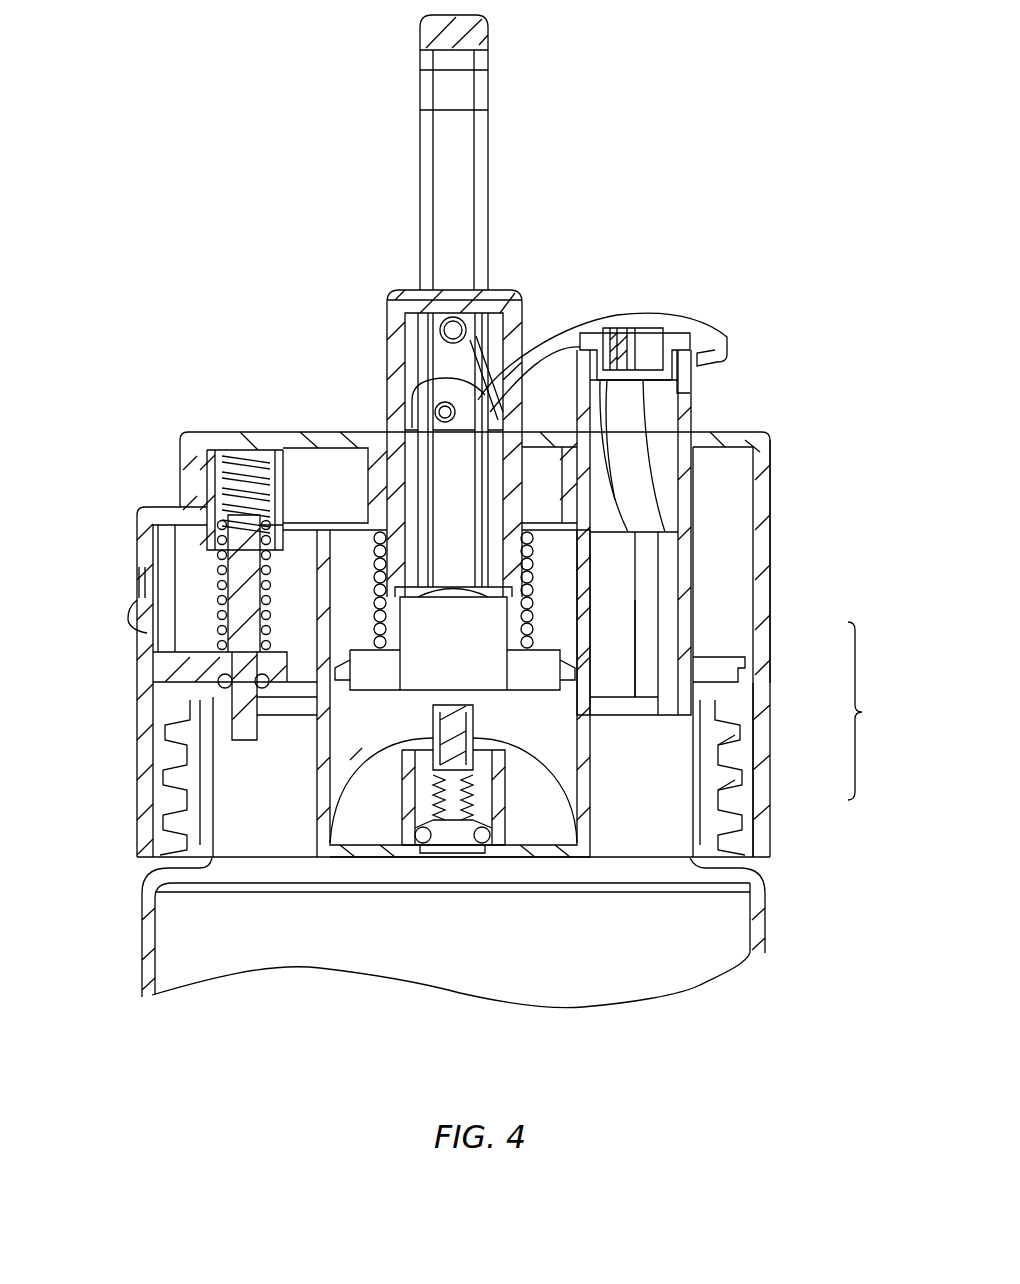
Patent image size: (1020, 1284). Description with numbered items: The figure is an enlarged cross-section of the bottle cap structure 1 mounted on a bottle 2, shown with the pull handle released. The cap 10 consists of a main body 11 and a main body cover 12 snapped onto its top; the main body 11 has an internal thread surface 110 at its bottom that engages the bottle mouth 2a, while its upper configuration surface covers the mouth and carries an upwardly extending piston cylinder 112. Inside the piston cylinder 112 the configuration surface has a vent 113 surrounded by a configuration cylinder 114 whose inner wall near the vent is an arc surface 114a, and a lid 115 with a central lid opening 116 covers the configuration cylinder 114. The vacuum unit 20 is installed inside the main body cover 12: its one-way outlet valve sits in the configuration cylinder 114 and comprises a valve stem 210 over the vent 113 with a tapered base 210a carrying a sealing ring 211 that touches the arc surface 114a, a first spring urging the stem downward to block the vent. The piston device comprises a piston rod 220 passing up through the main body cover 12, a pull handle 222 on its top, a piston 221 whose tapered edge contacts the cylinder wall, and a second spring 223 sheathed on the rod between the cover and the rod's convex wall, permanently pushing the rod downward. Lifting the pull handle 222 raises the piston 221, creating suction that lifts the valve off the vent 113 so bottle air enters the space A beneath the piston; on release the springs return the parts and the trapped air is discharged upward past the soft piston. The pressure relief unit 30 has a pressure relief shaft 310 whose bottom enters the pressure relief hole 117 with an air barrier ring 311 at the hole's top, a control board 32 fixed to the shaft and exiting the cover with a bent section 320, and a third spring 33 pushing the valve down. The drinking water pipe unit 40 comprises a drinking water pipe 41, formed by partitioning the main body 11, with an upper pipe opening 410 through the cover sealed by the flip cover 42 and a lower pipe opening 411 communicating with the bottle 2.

The bottle cap structure 1 is at (790, 509).
The bottle 2 is at (755, 917).
The bottle mouth 2a is at (703, 822).
The cap 10 is at (866, 711).
The main body 11 is at (753, 793).
The main body cover 12 is at (762, 640).
The vacuum unit 20 is at (358, 283).
The pressure relief unit 30 is at (125, 553).
The control board 32 is at (170, 667).
The third spring 33 is at (228, 455).
The drinking water pipe unit 40 is at (745, 322).
The drinking water pipe 41 is at (687, 490).
The flip cover 42 is at (668, 325).
The internal thread surface 110 is at (727, 753).
The piston cylinder 112 is at (222, 535).
The vent 113 is at (471, 837).
The configuration cylinder 114 is at (500, 802).
The arc surface 114a is at (423, 837).
The lid 115 is at (507, 752).
The lid opening 116 is at (560, 722).
The pressure relief hole 117 is at (250, 645).
The valve stem 210 is at (380, 762).
The tapered base 210a is at (457, 837).
The sealing ring 211 is at (400, 832).
The piston rod 220 is at (398, 343).
The piston 221 is at (338, 647).
The pull handle 222 is at (425, 165).
The second spring 223 is at (383, 570).
The pressure relief shaft 310 is at (240, 603).
The air barrier ring 311 is at (222, 683).
The bent section 320 is at (120, 615).
The upper pipe opening 410 is at (657, 397).
The lower pipe opening 411 is at (640, 720).
The space A is at (355, 755).